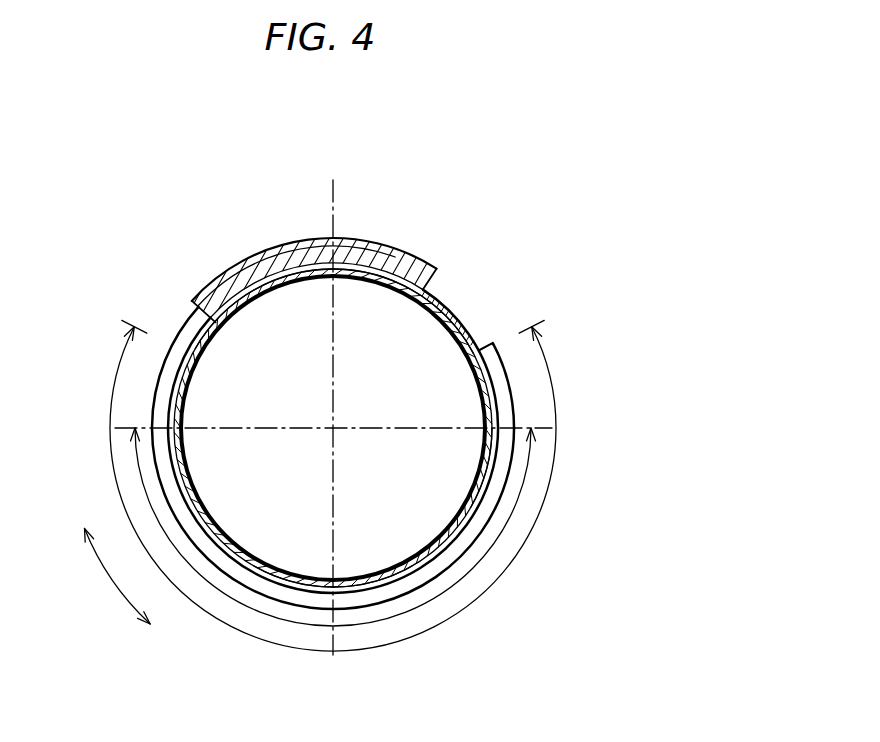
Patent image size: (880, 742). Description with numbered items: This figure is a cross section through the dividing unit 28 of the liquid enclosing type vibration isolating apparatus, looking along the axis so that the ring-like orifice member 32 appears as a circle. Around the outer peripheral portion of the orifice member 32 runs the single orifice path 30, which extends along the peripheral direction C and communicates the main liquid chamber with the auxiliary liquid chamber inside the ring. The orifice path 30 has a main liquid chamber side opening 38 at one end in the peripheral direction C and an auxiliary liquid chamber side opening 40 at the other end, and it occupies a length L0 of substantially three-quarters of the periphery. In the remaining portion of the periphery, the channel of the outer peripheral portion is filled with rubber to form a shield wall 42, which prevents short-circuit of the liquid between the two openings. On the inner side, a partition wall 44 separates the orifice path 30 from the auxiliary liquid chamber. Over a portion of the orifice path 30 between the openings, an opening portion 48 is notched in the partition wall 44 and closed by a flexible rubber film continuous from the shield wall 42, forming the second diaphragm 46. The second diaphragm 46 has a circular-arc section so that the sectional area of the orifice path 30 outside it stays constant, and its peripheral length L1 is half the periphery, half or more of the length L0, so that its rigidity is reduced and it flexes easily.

The dividing unit 28 is at (316, 132).
The orifice path 30 is at (428, 555).
The orifice member 32 is at (307, 275).
The main liquid chamber side opening 38 is at (452, 310).
The auxiliary liquid chamber side opening 40 is at (212, 337).
The shield wall 42 is at (388, 247).
The partition wall 44 is at (468, 376).
The second diaphragm 46 is at (370, 582).
The opening portion 48 is at (486, 432).
The length in the peripheral direction of the orifice path L0 is at (538, 518).
The length in the peripheral direction of the second diaphragm L1 is at (433, 600).
The peripheral direction C is at (110, 583).